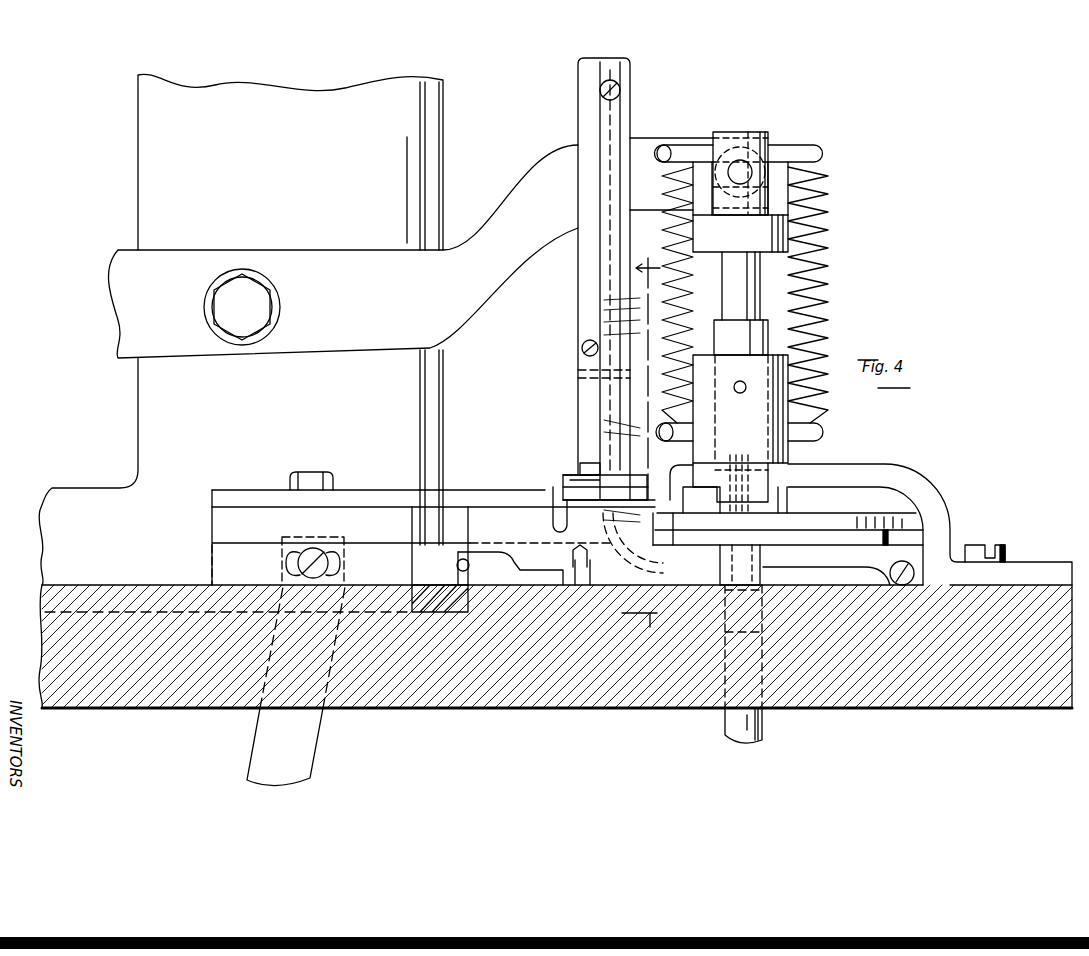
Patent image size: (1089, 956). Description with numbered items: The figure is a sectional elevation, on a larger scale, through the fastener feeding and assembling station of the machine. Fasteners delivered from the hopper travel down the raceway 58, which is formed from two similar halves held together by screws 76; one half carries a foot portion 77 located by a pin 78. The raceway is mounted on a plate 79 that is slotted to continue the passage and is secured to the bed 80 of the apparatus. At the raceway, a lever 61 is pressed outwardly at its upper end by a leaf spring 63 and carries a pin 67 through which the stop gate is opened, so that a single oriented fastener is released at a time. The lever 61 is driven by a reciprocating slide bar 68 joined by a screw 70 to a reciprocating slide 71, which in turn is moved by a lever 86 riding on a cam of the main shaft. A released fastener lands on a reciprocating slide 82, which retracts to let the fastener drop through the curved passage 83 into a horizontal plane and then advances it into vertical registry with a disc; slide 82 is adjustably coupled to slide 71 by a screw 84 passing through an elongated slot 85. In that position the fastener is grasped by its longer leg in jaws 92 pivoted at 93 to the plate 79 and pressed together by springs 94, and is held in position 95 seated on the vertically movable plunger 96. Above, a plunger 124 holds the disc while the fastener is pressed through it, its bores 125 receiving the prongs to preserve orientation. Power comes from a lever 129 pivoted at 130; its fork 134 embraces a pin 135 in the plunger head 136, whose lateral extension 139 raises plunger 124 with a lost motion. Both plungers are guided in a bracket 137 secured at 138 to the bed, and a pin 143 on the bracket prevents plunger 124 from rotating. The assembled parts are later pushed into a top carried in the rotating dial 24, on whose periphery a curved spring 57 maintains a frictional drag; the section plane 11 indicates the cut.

The section line 11 is at (650, 442).
The rotating dial 24 is at (848, 513).
The spring 57 is at (892, 586).
The raceway 58 is at (580, 315).
The lever 61 is at (563, 475).
The leaf spring 63 is at (613, 112).
The pin 67 is at (580, 463).
The reciprocating slide bar 68 is at (459, 490).
The screw 70 is at (323, 472).
The reciprocating slide 71 is at (212, 527).
The screws 76 is at (586, 355).
The foot portion 77 is at (548, 488).
The pin 78 is at (553, 520).
The plate 79 is at (490, 505).
The bed 80 is at (1053, 708).
The reciprocating slide 82 is at (212, 562).
The curved passage 83 is at (610, 586).
The screw 84 is at (335, 571).
The elongated slot 85 is at (330, 565).
The lever 86 is at (315, 775).
The jaws 92 is at (690, 586).
The pivot 93 is at (578, 586).
The springs 94 is at (531, 585).
The fastener position 95 is at (758, 600).
The plunger 96 is at (762, 725).
The plunger 124 is at (768, 326).
The bores 125 is at (748, 455).
The lever 129 is at (490, 312).
The pivot 130 is at (266, 314).
The fork 134 is at (776, 135).
The pin 135 is at (737, 162).
The plunger head 136 is at (790, 148).
The bracket 137 is at (930, 500).
The securing point 138 is at (1006, 545).
The lateral extension 139 is at (790, 240).
The pin 143 is at (740, 393).